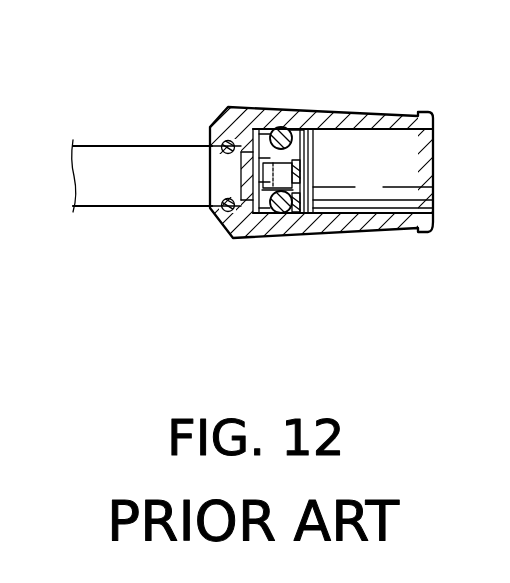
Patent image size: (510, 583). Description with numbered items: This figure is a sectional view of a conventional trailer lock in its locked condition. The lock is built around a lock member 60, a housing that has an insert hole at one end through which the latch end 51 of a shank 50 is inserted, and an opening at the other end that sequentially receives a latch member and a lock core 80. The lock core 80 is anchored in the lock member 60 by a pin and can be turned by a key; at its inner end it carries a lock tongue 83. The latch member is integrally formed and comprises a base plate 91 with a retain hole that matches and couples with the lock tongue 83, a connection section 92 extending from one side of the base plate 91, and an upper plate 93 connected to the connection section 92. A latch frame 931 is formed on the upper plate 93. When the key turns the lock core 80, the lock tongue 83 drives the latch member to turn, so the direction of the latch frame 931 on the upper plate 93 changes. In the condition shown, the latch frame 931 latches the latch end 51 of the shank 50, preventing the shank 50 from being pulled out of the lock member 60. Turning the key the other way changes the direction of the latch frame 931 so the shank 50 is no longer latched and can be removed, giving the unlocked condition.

The shank 50 is at (132, 158).
The latch end 51 is at (268, 126).
The lock member 60 is at (295, 110).
The lock core 80 is at (368, 214).
The lock tongue 83 is at (322, 110).
The base plate 91 is at (303, 212).
The connection section 92 is at (268, 216).
The upper plate 93 is at (235, 242).
The latch frame 931 is at (233, 126).